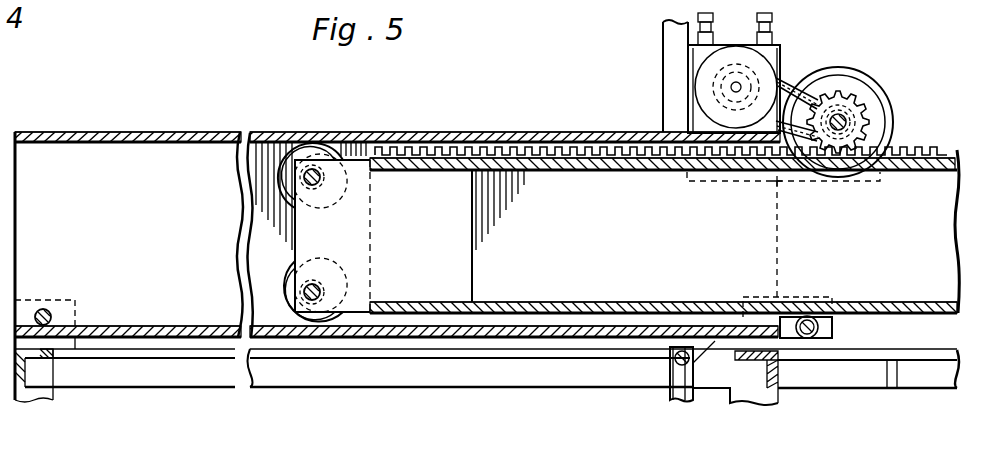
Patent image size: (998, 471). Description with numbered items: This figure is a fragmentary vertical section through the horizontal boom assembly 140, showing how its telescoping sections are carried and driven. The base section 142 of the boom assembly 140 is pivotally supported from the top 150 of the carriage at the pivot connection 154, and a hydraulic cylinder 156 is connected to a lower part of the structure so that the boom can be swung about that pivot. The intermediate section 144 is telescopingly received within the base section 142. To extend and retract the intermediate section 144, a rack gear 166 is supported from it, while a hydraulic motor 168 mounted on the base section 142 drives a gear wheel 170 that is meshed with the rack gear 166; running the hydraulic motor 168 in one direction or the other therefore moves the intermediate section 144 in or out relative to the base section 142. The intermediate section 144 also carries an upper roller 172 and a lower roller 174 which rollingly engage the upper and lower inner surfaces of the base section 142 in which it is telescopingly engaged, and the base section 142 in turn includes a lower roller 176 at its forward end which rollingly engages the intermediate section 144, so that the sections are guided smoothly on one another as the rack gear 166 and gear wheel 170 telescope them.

The horizontal boom assembly 140 is at (604, 203).
The base section 142 is at (434, 134).
The intermediate section 144 is at (913, 312).
The top 150 is at (555, 349).
The pivot connection 154 is at (52, 306).
The hydraulic cylinder 156 is at (674, 382).
The rack gear 166 is at (914, 147).
The hydraulic motor 168 is at (752, 67).
The gear wheel 170 is at (846, 101).
The upper roller 172 is at (312, 154).
The lower roller 174 is at (340, 274).
The lower roller 176 is at (832, 313).